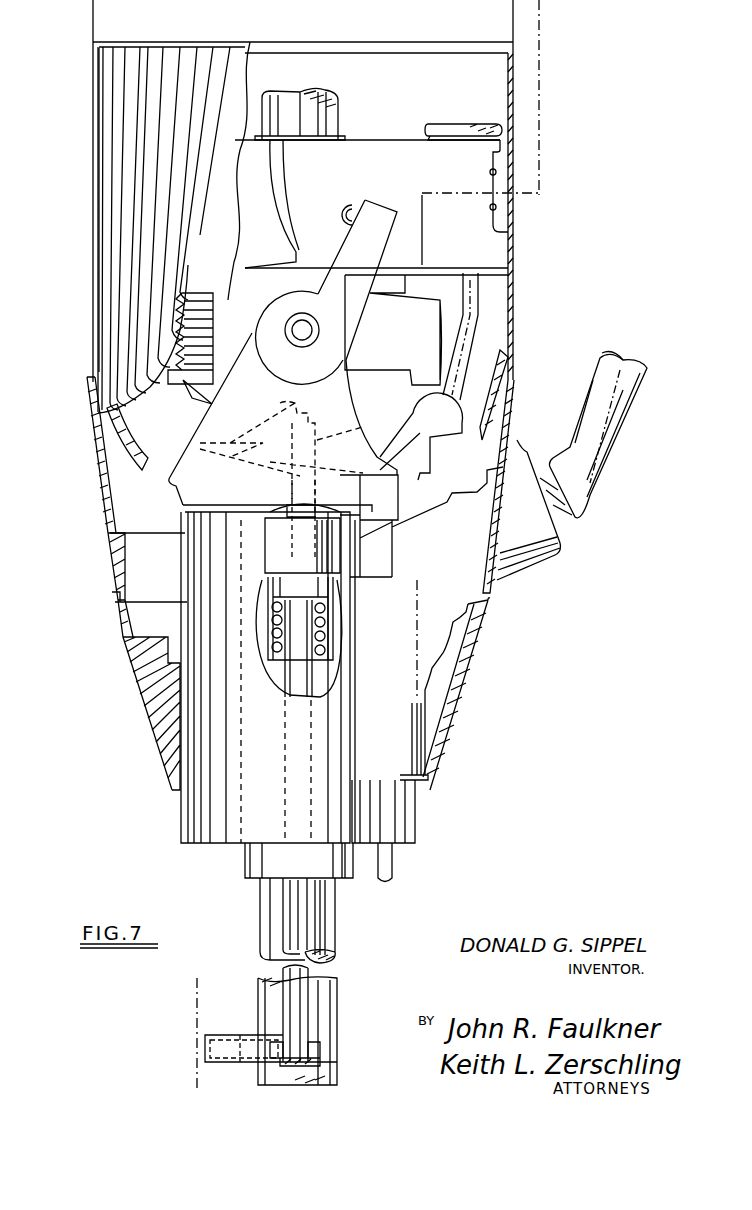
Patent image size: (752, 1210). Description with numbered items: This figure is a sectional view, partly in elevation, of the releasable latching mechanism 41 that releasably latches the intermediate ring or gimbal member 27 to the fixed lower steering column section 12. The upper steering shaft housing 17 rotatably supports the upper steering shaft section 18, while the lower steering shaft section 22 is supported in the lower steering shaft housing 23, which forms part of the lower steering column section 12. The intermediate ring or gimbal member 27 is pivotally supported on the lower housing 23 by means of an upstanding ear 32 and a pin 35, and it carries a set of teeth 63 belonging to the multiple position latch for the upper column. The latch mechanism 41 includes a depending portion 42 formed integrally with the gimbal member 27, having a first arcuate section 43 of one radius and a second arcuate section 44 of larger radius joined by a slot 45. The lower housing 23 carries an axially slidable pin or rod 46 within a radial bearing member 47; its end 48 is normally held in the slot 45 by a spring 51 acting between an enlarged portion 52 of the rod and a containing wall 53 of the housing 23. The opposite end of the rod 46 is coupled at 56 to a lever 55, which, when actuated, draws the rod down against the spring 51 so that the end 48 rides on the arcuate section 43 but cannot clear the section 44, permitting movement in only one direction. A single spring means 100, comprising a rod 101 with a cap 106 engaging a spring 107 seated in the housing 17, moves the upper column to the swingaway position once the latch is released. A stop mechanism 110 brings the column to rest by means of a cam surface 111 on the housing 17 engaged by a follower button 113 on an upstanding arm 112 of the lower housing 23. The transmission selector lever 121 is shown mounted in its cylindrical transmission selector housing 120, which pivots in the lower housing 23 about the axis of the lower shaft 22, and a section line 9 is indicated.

The section line 9 is at (393, 681).
The lower steering column section 12 is at (189, 1000).
The upper steering shaft housing 17 is at (367, 148).
The upper steering shaft section 18 is at (318, 92).
The lower steering shaft section 22 is at (268, 925).
The lower steering shaft housing 23 is at (273, 402).
The intermediate ring or gimbal member 27 is at (205, 327).
The upstanding ear 32 is at (170, 385).
The pin 35 is at (292, 323).
The releasable latch mechanism 41 is at (283, 498).
The depending portion 42 is at (196, 405).
The first arcuate section 43 is at (395, 400).
The second arcuate section 44 is at (275, 476).
The slot 45 is at (178, 488).
The pin or rod 46 is at (297, 912).
The radial bearing member 47 is at (300, 548).
The end of the pin or rod 48 is at (281, 454).
The spring 51 is at (353, 595).
The enlarged portion 52 is at (353, 567).
The containing wall 53 is at (327, 667).
The lever 55 is at (310, 1062).
The coupling of rod to lever 56 is at (328, 1030).
The set of teeth 63 is at (215, 343).
The single spring means 100 is at (506, 225).
The rod 101 is at (470, 320).
The cap 106 is at (455, 124).
The spring 107 is at (497, 173).
The stop mechanism 110 is at (338, 216).
The cam surface 111 is at (283, 197).
The upstanding arm 112 is at (378, 248).
The follower button 113 is at (352, 222).
The transmission selector housing 120 is at (508, 585).
The transmission selector lever 121 is at (625, 372).